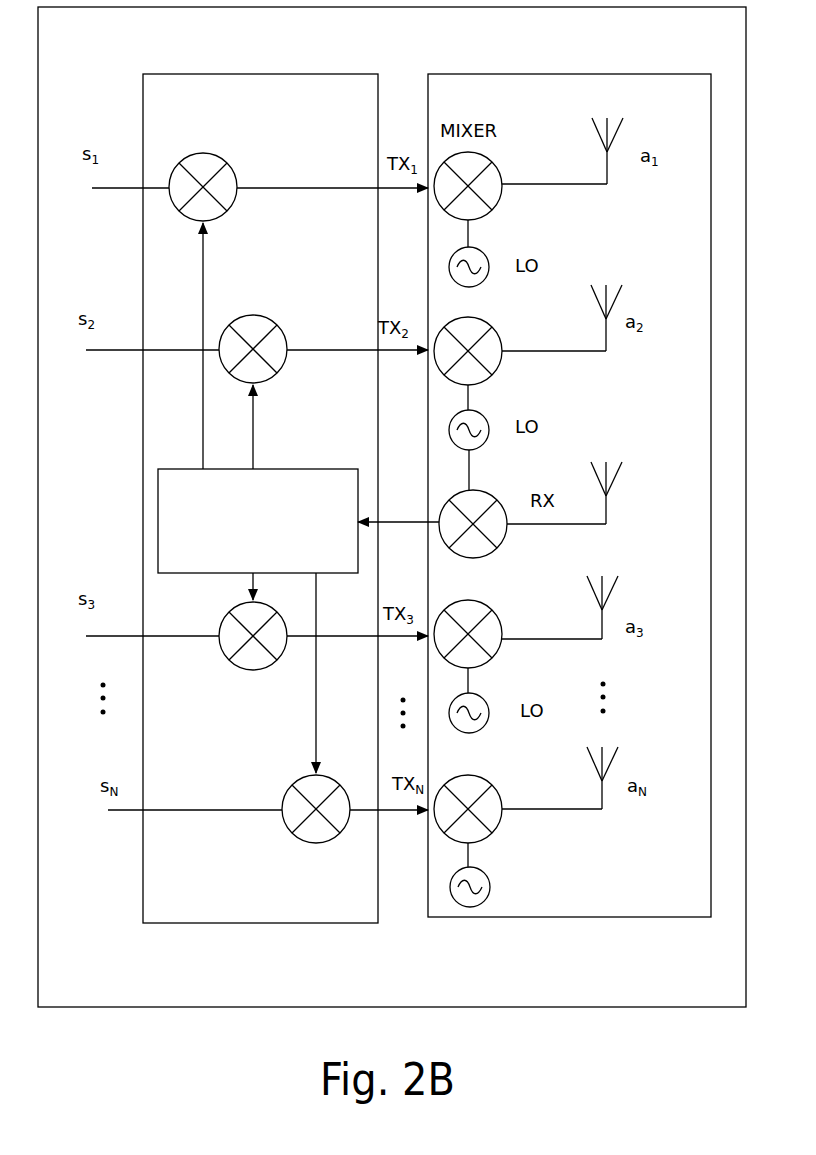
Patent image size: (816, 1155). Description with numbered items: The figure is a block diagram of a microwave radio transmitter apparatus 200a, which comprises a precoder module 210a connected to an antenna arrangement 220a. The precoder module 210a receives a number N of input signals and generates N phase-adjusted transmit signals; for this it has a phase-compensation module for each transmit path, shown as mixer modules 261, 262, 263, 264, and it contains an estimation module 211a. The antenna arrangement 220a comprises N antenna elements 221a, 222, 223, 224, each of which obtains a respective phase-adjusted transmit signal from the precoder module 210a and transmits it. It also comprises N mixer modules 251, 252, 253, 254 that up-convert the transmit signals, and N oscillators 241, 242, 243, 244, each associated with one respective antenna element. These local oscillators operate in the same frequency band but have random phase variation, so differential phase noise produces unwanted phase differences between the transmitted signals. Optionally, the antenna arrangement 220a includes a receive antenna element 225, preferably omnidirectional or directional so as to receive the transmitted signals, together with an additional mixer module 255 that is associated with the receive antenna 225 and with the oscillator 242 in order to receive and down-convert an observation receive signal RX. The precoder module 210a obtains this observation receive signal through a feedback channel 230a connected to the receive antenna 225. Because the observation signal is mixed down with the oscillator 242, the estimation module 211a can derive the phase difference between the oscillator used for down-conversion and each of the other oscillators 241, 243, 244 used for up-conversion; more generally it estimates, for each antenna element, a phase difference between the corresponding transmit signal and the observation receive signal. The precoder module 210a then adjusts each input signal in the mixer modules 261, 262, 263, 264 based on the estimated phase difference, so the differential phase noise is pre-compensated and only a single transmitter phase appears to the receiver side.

The microwave radio transmitter apparatus 200a is at (392, 507).
The precoder module 210a is at (260, 498).
The estimation module 211a is at (258, 498).
The antenna arrangement 220a is at (667, 920).
The feedback channel 230a is at (365, 526).
The mixer module 261 is at (228, 210).
The mixer module 262 is at (278, 372).
The mixer module 263 is at (252, 670).
The mixer module 264 is at (303, 838).
The mixer module 251 is at (493, 209).
The mixer module 252 is at (493, 374).
The mixer module 253 is at (493, 657).
The mixer module 254 is at (493, 832).
The additional mixer module 255 is at (498, 547).
The oscillator 241 is at (489, 267).
The oscillator 242 is at (489, 430).
The oscillator 243 is at (489, 713).
The oscillator 244 is at (490, 887).
The antenna element 221a is at (530, 184).
The antenna element 222 is at (540, 352).
The antenna element 223 is at (565, 641).
The antenna element 224 is at (530, 810).
The receive antenna element 225 is at (545, 524).